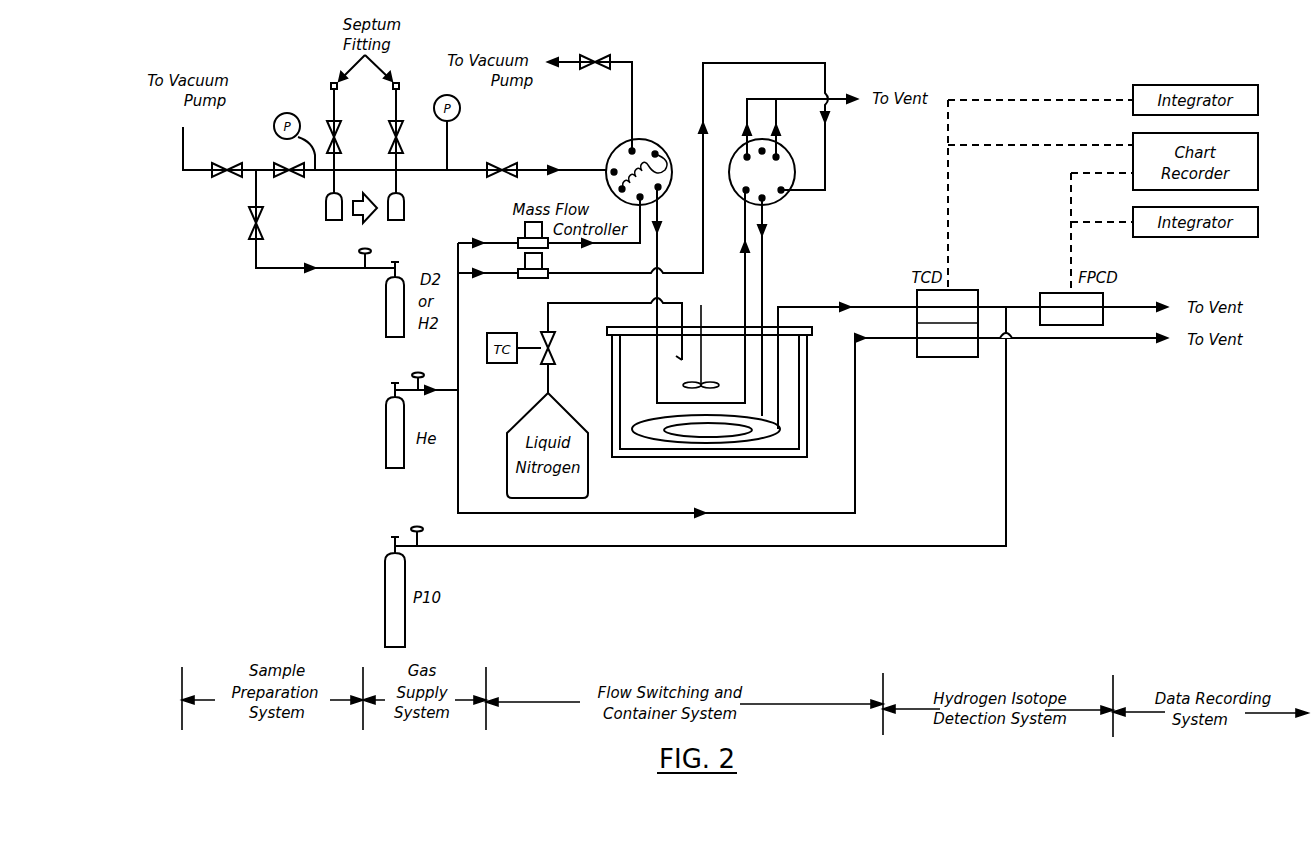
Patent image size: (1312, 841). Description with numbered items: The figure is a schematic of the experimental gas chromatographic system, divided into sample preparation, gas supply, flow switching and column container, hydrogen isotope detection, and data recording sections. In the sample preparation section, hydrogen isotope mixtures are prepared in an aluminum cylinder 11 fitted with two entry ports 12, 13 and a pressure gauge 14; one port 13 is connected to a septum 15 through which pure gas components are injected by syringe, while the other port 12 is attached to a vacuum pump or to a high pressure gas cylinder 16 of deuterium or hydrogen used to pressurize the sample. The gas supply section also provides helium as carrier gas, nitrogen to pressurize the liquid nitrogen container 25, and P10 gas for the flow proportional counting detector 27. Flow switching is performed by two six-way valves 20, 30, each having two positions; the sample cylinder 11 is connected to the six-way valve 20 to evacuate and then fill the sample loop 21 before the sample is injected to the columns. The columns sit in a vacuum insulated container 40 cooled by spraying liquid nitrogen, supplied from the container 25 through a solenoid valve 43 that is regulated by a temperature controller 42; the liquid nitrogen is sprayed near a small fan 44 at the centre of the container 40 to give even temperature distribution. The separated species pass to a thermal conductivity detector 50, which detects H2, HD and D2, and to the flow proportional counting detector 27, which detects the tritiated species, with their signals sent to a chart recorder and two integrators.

The aluminum cylinder 11 is at (331, 211).
The entry port 12 is at (327, 170).
The entry port 13 is at (338, 160).
The pressure gauge 14 is at (281, 114).
The septum 15 is at (331, 81).
The high pressure gas cylinder 16 is at (388, 300).
The six-way valve 20 is at (645, 141).
The sample loop 21 is at (677, 162).
The liquid nitrogen container 25 is at (562, 422).
The flow proportional counting detector 27 is at (1052, 293).
The six-way valve 30 is at (775, 200).
The vacuum insulated container 40 is at (807, 412).
The temperature controller 42 is at (502, 333).
The solenoid valve 43 is at (557, 347).
The fan 44 is at (705, 383).
The thermal conductivity detector 50 is at (968, 290).